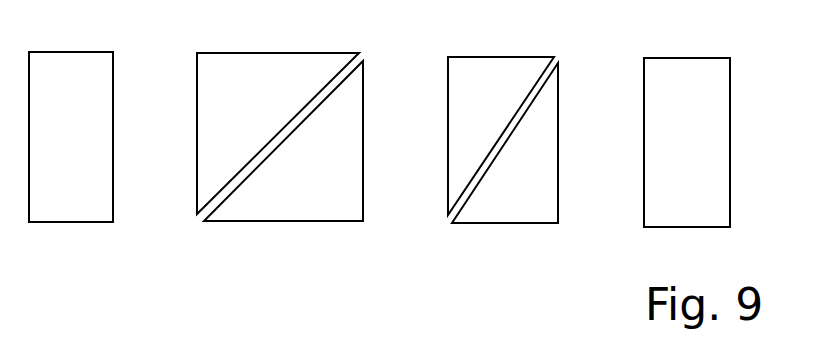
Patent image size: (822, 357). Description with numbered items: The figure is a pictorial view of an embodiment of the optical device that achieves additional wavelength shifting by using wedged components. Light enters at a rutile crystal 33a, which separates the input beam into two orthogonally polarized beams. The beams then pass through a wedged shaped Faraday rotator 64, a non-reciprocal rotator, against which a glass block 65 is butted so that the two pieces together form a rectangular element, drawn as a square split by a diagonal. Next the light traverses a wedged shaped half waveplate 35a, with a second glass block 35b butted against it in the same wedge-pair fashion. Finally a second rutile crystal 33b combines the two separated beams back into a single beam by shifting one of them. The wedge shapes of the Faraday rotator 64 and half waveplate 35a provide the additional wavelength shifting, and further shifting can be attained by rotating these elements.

The rutile crystal 33a is at (68, 60).
The wedged shaped Faraday rotator 64 is at (264, 60).
The glass block 65 is at (299, 213).
The wedged shaped half waveplate 35a is at (517, 60).
The glass block 35b is at (551, 215).
The second rutile crystal 33b is at (686, 63).